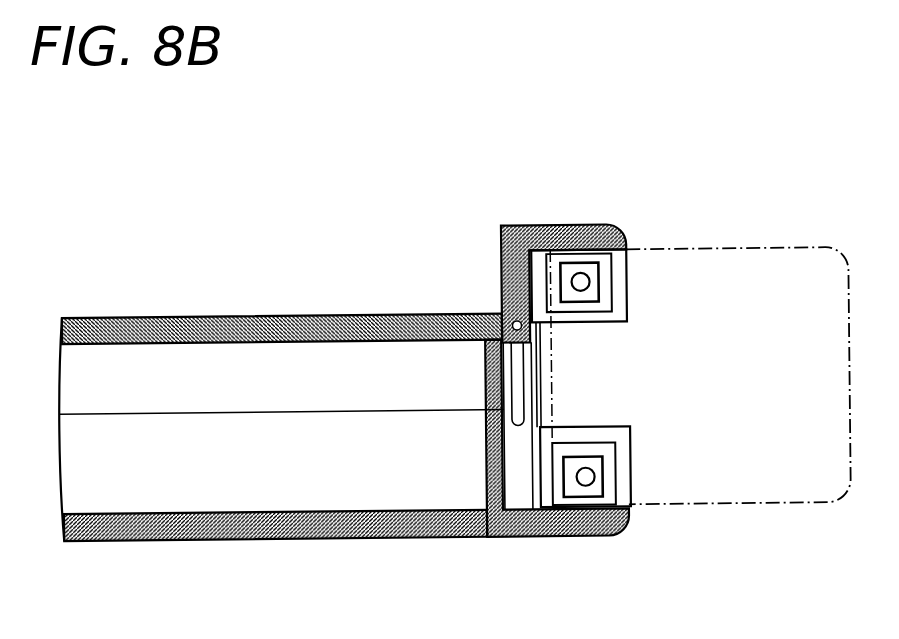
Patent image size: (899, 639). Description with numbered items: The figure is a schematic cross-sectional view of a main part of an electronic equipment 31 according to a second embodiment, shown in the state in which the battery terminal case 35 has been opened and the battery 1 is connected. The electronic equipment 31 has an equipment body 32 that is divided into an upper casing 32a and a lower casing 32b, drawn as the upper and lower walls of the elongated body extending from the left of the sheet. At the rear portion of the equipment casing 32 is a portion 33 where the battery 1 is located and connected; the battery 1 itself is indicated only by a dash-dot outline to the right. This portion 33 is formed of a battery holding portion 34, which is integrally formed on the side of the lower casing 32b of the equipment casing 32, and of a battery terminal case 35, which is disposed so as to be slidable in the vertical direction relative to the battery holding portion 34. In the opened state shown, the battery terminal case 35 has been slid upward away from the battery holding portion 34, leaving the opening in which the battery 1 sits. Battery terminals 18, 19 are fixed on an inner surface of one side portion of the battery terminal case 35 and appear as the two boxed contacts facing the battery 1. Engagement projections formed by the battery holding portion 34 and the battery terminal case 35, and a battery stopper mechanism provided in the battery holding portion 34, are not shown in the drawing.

The battery 1 is at (767, 250).
The battery terminal 18 is at (605, 460).
The battery terminal 19 is at (607, 281).
The electronic equipment 31 is at (152, 292).
The equipment body 32 is at (243, 313).
The upper casing 32a is at (360, 313).
The lower casing 32b is at (285, 537).
The portion where battery is located and connected 33 is at (648, 358).
The battery holding portion 34 is at (605, 492).
The battery terminal case 35 is at (570, 225).